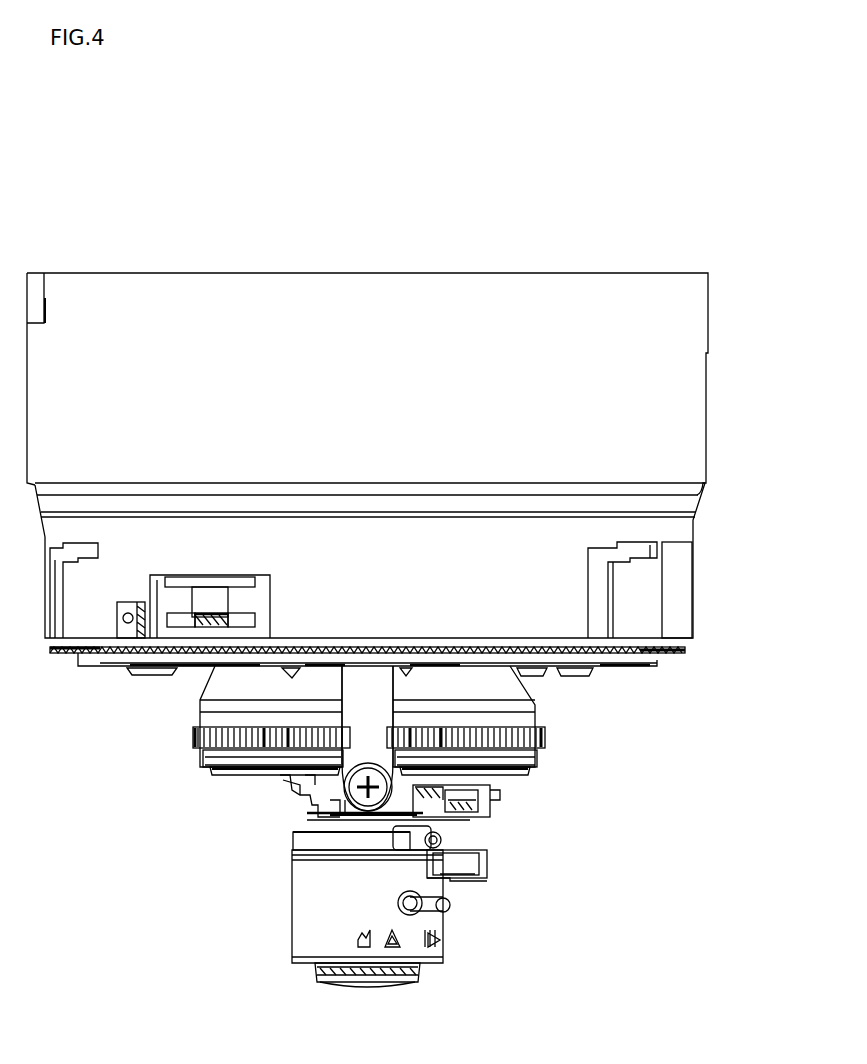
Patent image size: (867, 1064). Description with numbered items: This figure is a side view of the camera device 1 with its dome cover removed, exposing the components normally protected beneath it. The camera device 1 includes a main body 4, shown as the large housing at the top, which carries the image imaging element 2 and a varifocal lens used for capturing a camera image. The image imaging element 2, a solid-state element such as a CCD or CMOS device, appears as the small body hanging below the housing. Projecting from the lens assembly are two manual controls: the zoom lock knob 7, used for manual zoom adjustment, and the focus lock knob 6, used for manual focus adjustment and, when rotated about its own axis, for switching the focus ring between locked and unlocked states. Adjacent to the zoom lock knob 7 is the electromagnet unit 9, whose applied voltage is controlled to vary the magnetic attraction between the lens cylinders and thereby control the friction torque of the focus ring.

The camera device 1 is at (570, 230).
The image imaging element 2 is at (375, 985).
The main body 4 is at (707, 405).
The focus lock knob 6 is at (450, 905).
The zoom lock knob 7 is at (438, 835).
The electromagnet unit 9 is at (489, 868).